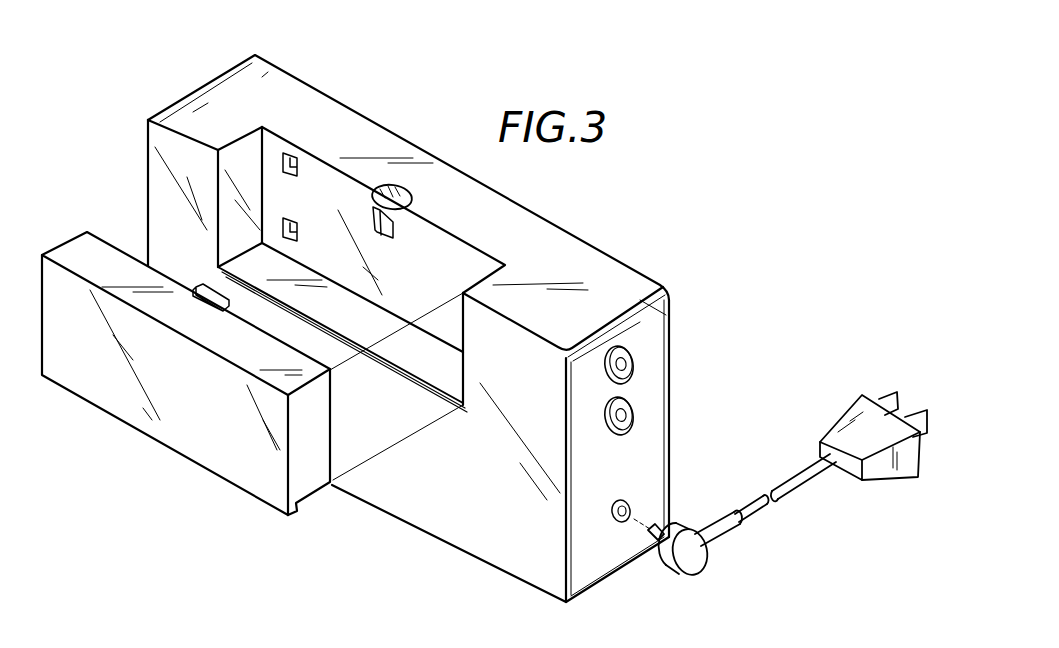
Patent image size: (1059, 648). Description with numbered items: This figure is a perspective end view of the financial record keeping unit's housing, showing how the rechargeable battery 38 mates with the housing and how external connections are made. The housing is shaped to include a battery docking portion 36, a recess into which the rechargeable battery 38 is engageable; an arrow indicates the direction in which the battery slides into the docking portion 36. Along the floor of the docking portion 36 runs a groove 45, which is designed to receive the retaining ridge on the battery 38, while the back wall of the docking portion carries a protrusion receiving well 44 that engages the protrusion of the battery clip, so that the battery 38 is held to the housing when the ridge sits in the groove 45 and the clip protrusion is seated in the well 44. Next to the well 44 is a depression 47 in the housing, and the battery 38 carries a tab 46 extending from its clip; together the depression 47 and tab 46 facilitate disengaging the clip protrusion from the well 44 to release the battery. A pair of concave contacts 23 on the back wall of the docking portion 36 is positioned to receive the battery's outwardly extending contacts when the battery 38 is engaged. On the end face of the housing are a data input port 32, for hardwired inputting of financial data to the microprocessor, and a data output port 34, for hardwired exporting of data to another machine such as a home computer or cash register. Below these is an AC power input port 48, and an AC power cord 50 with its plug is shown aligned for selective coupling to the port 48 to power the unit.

The concave contacts 23 is at (297, 163).
The data input port 32 is at (628, 367).
The data output port 34 is at (628, 415).
The battery docking portion 36 is at (450, 277).
The rechargeable battery 38 is at (237, 462).
The protrusion receiving well 44 is at (394, 226).
The groove 45 is at (433, 390).
The tab 46 is at (196, 300).
The depression 47 is at (407, 187).
The AC power input port 48 is at (630, 507).
The AC power cord 50 is at (709, 554).